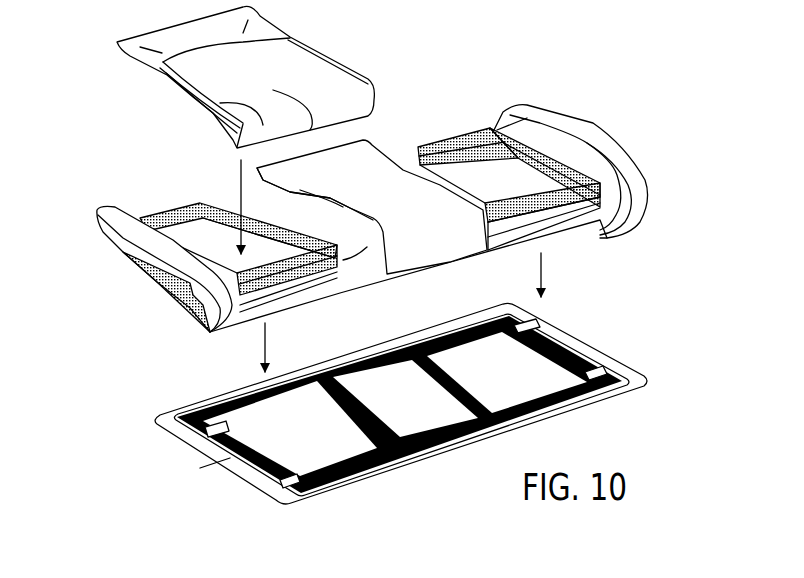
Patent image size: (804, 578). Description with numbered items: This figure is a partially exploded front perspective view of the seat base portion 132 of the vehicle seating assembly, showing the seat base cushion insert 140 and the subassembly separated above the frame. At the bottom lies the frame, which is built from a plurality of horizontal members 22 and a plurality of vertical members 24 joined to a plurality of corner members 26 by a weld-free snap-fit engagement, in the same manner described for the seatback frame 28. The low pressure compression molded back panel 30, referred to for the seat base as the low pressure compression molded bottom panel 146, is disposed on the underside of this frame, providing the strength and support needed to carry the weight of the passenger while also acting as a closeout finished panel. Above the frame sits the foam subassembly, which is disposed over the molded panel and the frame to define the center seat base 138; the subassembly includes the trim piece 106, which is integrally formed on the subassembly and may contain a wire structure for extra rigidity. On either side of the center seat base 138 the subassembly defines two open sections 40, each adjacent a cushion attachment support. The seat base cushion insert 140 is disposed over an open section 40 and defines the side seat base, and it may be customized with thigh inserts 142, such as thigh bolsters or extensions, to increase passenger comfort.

The seat base cushion insert 140 is at (250, 65).
The thigh inserts 142 is at (215, 104).
The center seat base 138 is at (370, 172).
The trim piece 106 is at (542, 115).
The open section 40 is at (200, 236).
The seat base portion 132 is at (380, 194).
The seatback frame 28 is at (395, 423).
The low pressure compression molded bottom panel 146 is at (647, 372).
The low pressure compression molded back panel 30 is at (225, 463).
The corner members 26 is at (307, 498).
The horizontal members 22 is at (390, 470).
The vertical members 24 is at (568, 348).